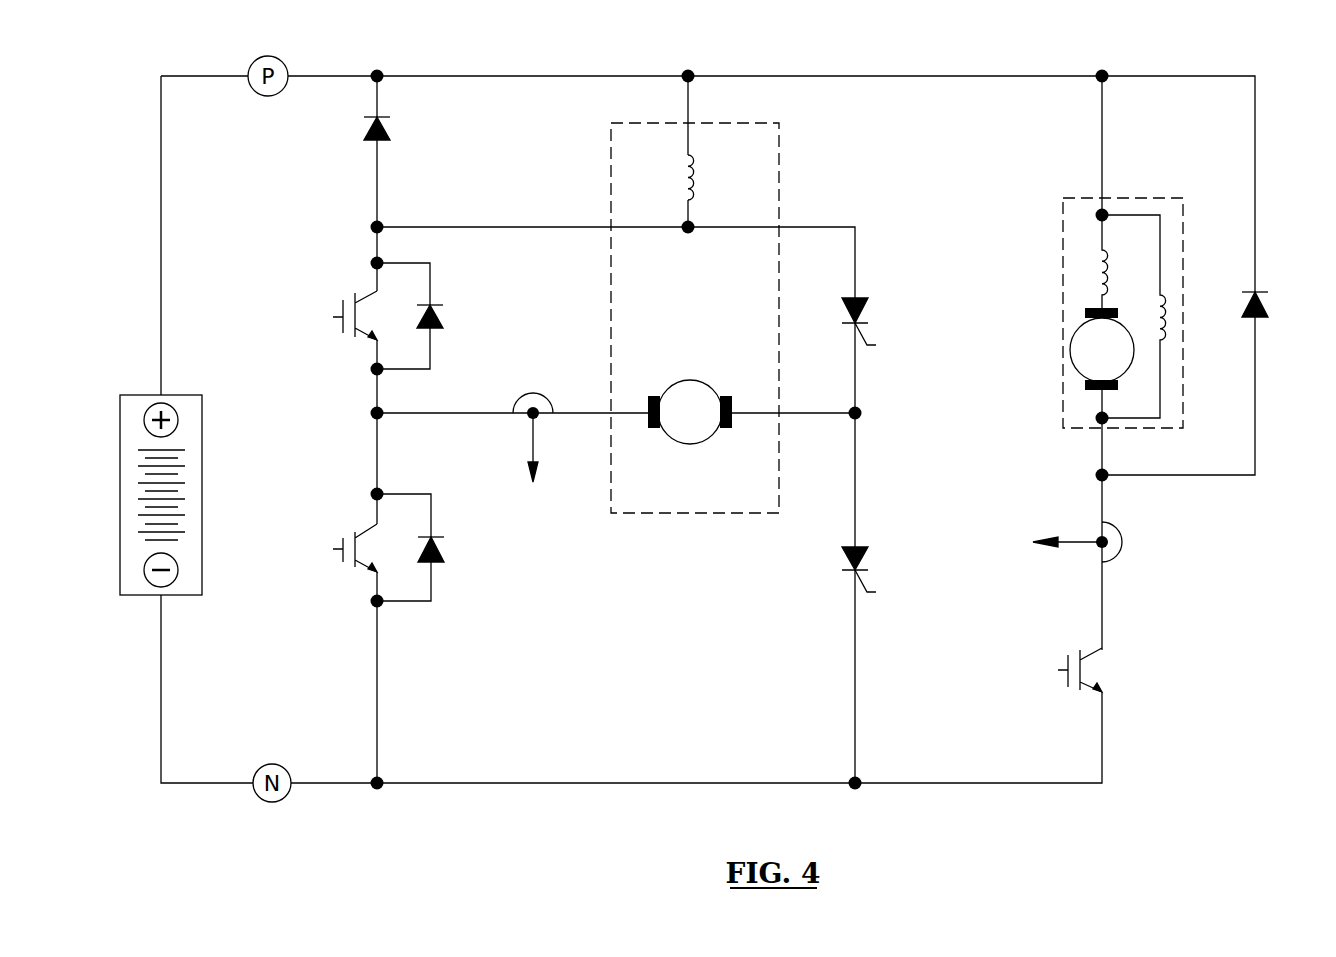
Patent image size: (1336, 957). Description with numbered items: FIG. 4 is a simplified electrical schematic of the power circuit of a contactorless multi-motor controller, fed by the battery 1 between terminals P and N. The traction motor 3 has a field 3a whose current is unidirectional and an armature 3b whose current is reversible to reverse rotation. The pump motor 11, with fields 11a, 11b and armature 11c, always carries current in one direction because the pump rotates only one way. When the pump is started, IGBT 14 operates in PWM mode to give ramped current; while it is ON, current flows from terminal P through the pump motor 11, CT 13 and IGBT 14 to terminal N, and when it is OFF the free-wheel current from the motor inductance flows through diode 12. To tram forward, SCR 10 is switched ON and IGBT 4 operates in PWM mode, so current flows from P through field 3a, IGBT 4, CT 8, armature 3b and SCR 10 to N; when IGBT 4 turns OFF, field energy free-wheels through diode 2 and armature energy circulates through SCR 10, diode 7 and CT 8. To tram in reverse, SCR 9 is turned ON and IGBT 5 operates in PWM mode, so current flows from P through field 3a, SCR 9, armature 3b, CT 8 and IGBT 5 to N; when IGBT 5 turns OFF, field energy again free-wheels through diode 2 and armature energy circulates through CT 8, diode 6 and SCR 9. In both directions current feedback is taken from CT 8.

The 120V battery 1 is at (189, 400).
The diode 2 is at (355, 127).
The traction motor 3 is at (716, 310).
The field 3a is at (673, 177).
The armature 3b is at (690, 397).
The IGBT 4 is at (351, 301).
The IGBT 5 is at (351, 532).
The diode 6 is at (438, 290).
The diode 7 is at (438, 522).
The CT 8 is at (521, 423).
The SCR 9 is at (878, 320).
The SCR 10 is at (882, 566).
The pump motor 11 is at (1110, 302).
The field 11a is at (1100, 268).
The field 11b is at (1180, 320).
The armature 11c is at (1072, 375).
The diode 12 is at (1276, 301).
The CT 13 is at (1098, 552).
The IGBT 14 is at (1092, 670).